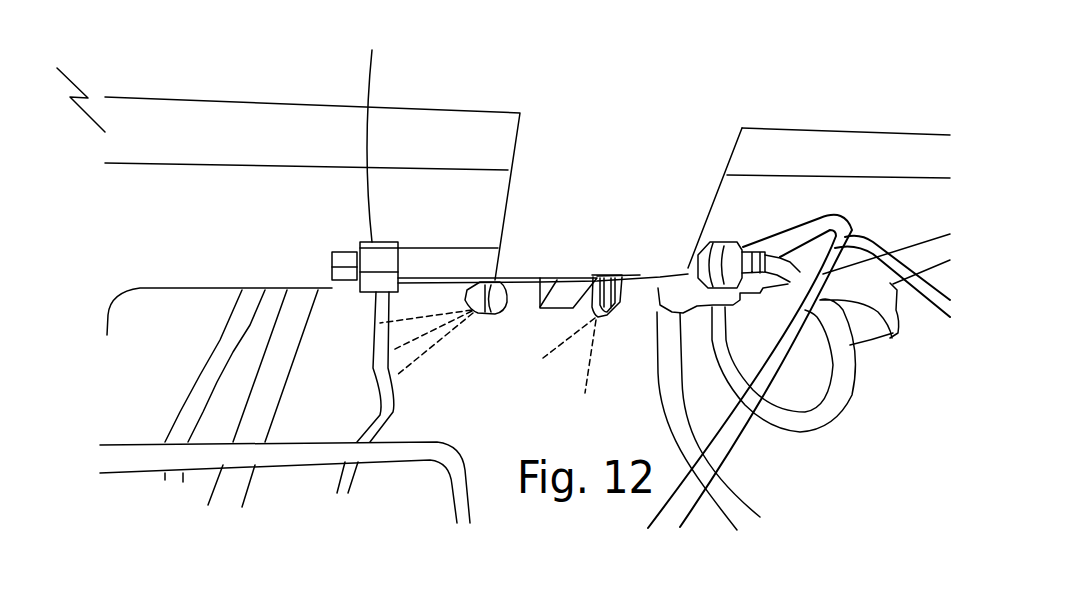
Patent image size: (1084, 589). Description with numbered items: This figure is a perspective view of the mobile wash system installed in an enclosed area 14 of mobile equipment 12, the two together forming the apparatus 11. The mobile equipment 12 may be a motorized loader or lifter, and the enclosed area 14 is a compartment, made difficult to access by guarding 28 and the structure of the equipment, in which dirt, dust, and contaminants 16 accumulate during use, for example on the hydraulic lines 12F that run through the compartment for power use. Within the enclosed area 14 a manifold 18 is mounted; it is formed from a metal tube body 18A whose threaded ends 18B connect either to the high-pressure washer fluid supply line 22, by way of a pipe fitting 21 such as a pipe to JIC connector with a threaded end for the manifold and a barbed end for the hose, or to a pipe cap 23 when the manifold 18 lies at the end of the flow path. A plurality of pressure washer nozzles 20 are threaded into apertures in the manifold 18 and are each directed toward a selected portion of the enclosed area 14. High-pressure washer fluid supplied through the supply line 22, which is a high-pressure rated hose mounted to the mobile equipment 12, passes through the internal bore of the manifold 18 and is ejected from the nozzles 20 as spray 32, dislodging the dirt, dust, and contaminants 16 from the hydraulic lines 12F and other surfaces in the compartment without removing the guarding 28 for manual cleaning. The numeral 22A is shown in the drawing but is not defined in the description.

The apparatus 11 is at (74, 86).
The mobile equipment 12 is at (580, 158).
The hydraulic lines 12F is at (676, 423).
The enclosed area 14 is at (853, 207).
The dirt, dust, and contaminants 16 is at (279, 239).
The manifold 18 is at (460, 262).
The tube body 18A is at (423, 260).
The threaded ends 18B is at (721, 233).
The pressure washer nozzles 20 is at (467, 288).
The pipe fitting 21 is at (758, 212).
The high-pressure washer fluid supply line 22 is at (847, 393).
The hose bracket 22A is at (895, 333).
The pipe cap 23 is at (340, 257).
The guarding 28 is at (870, 250).
The washer fluid spray 32 is at (412, 363).